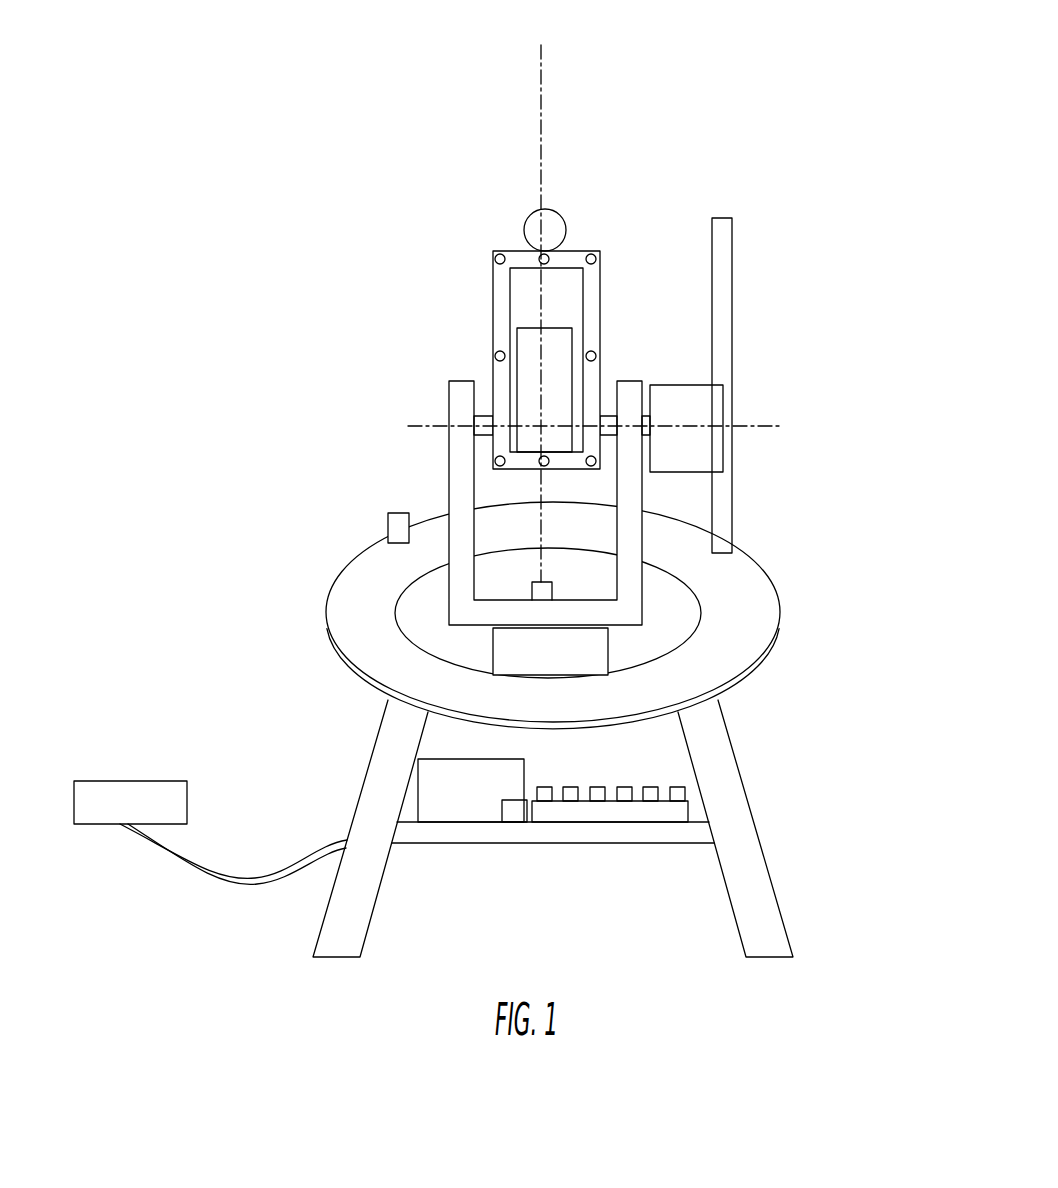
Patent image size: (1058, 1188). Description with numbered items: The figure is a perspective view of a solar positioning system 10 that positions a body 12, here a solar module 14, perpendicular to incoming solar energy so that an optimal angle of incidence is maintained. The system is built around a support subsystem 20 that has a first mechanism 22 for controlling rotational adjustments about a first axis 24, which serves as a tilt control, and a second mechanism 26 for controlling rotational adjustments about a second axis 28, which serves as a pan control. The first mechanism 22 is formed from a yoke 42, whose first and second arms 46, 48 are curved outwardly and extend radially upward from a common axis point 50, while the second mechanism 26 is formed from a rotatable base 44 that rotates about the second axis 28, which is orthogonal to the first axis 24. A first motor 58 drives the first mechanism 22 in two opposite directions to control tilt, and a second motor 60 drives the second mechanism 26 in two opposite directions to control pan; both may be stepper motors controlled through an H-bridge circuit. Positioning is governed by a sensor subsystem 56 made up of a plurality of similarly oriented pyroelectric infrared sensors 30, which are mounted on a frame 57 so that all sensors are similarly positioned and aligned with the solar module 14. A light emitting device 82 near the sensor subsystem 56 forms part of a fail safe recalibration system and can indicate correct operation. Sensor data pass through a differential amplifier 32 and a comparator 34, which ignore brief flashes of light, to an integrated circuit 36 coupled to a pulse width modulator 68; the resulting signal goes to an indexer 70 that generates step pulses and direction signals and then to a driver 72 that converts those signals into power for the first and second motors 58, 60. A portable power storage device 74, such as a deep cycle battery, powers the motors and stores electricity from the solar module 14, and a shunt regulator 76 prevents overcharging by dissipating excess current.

The solar positioning system 10 is at (609, 76).
The body 12 is at (484, 351).
The solar module 14 is at (557, 350).
The support subsystem 20 is at (469, 527).
The first mechanism 22 is at (727, 362).
The first axis 24 is at (775, 426).
The second mechanism 26 is at (554, 729).
The second axis 28 is at (541, 157).
The pyroelectric infrared sensors 30 is at (541, 257).
The differential amplifier 32 is at (677, 797).
The comparator 34 is at (650, 797).
The integrated circuit 36 is at (597, 797).
The yoke 42 is at (643, 599).
The rotatable base 44 is at (417, 606).
The first arm 46 is at (450, 550).
The second arm 48 is at (675, 553).
The common axis point 50 is at (532, 590).
The sensor subsystem 56 is at (557, 332).
The frame 57 is at (600, 298).
The first motor 58 is at (700, 462).
The second motor 60 is at (608, 650).
The pulse width modulator 68 is at (623, 797).
The indexer 70 is at (570, 797).
The driver 72 is at (543, 803).
The portable power storage device 74 is at (445, 812).
The shunt regulator 76 is at (510, 817).
The light emitting device 82 is at (527, 223).